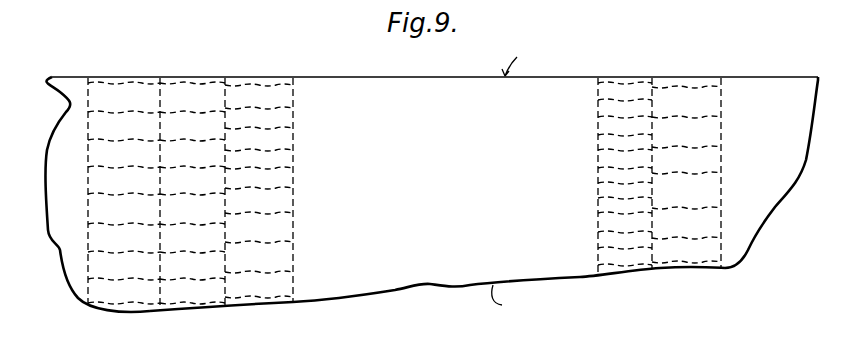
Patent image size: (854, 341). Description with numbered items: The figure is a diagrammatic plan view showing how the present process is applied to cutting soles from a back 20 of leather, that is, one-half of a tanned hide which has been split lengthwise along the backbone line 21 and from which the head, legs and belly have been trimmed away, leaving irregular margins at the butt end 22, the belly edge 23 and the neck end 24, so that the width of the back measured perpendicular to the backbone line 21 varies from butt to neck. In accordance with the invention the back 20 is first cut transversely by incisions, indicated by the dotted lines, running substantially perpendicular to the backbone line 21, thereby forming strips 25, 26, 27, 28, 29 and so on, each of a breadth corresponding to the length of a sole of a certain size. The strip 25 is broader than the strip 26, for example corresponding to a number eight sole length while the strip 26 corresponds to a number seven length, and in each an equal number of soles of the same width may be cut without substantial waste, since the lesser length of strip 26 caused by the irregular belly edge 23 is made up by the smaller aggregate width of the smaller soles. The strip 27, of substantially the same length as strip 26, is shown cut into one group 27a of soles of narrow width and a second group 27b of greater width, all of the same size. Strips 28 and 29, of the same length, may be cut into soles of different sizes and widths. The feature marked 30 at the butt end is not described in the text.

The back 20 is at (362, 93).
The backbone line 21 is at (430, 78).
The butt end 22 is at (55, 262).
The belly edge 23 is at (412, 291).
The neck end 24 is at (770, 215).
The strip 25 is at (88, 66).
The strip 26 is at (162, 66).
The strip 27 is at (226, 66).
The group of soles of narrow width 27a is at (303, 78).
The group of soles of greater width 27b is at (303, 184).
The strip 28 is at (598, 70).
The strip 29 is at (655, 70).
The nape portion 30 is at (108, 97).